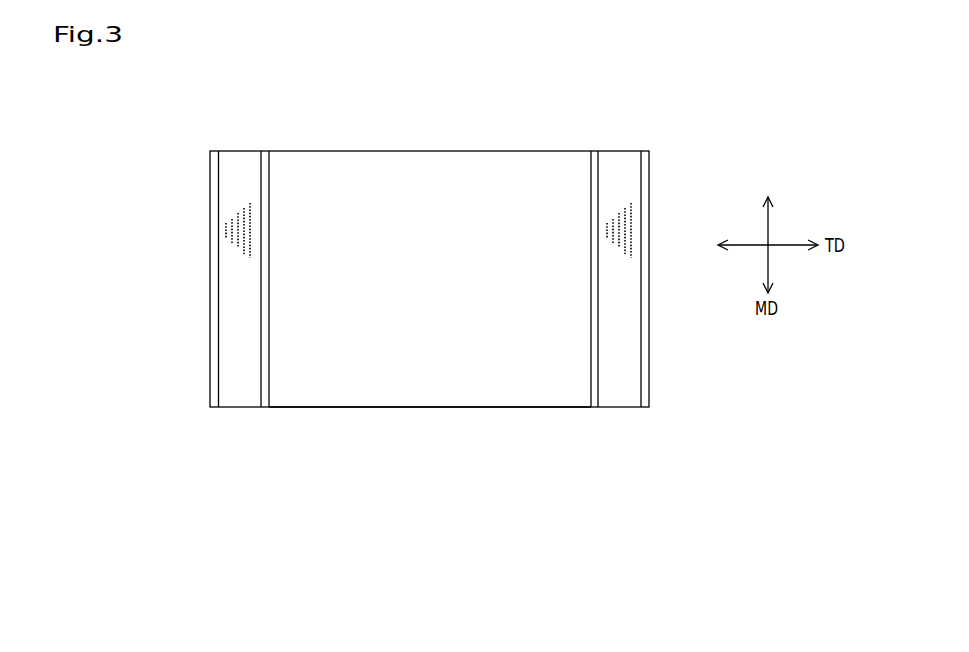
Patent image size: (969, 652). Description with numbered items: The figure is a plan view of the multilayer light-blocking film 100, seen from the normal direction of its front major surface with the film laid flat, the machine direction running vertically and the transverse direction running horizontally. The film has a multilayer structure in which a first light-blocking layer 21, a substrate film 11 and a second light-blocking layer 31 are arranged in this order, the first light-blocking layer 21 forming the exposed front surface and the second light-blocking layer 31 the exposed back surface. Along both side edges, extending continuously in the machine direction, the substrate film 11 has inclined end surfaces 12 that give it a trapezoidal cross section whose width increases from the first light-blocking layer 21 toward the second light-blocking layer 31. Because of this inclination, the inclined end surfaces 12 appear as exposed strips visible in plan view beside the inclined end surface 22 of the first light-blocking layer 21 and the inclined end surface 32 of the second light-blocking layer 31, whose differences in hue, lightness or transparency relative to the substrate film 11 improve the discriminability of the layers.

The multilayer light-blocking film 100 is at (426, 290).
The first light-blocking layer 21 is at (430, 401).
The inclined end surface 22 is at (265, 407).
The inclined end surface 12 is at (427, 340).
The substrate film 11 is at (428, 230).
The inclined end surface 32 is at (426, 302).
The second light-blocking layer 31 is at (214, 407).